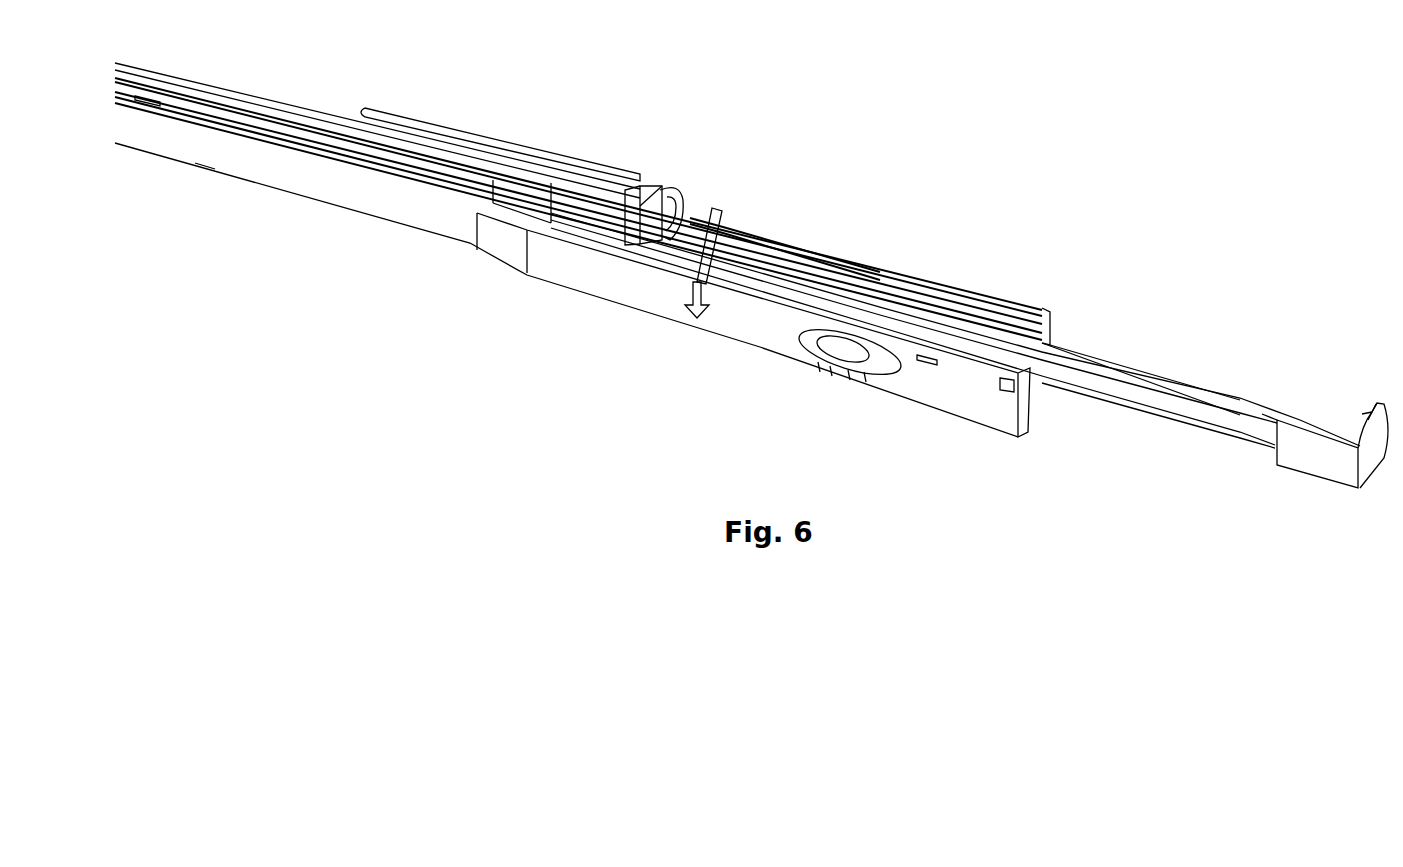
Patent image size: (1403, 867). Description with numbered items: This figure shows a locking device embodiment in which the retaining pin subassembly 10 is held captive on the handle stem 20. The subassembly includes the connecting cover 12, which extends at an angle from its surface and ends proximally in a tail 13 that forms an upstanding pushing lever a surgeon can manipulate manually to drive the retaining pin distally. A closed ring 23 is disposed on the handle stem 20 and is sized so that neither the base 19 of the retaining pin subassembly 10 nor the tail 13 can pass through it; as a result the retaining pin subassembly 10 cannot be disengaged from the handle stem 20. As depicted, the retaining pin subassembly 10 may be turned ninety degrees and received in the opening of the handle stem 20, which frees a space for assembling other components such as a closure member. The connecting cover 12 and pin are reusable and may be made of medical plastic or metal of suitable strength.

The retaining pin subassembly 10 is at (678, 182).
The connecting cover 12 is at (1150, 375).
The tail 13 is at (1368, 413).
The base 19 is at (685, 200).
The handle stem 20 is at (597, 273).
The closed ring 23 is at (722, 213).